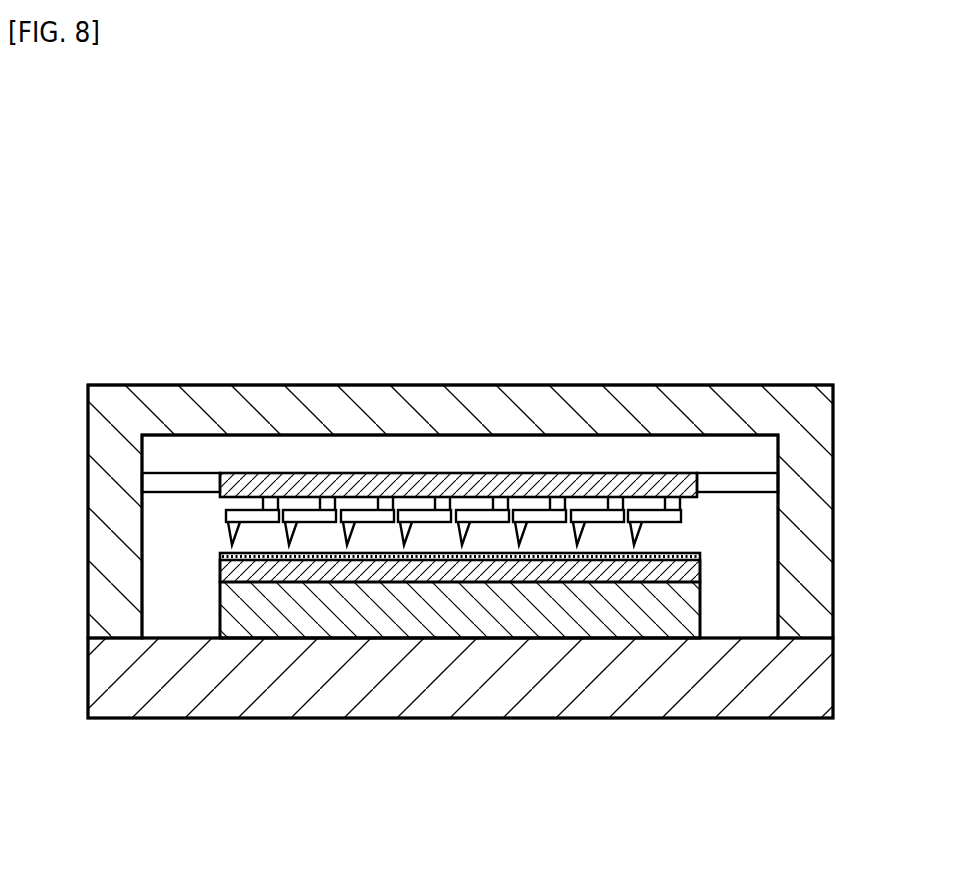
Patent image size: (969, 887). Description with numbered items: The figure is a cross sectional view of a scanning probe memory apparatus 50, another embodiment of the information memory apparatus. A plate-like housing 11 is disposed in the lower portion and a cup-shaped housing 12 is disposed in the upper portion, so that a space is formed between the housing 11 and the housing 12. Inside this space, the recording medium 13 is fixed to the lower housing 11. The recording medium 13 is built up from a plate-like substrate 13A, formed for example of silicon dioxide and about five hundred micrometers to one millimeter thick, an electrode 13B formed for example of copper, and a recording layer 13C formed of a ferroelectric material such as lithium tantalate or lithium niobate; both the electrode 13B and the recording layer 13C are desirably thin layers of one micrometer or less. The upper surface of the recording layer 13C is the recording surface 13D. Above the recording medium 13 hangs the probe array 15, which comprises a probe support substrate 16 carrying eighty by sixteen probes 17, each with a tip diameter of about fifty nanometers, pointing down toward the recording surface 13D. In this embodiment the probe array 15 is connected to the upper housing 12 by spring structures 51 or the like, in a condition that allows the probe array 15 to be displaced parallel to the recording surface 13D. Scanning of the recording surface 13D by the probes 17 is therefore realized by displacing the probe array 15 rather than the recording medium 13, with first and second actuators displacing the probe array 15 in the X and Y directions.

The probe memory apparatus 50 is at (776, 345).
The cup-shaped housing 12 is at (433, 385).
The plate-like housing 11 is at (440, 708).
The probe array 15 is at (352, 452).
The spring structures 51 is at (198, 480).
The probe support substrate 16 is at (488, 480).
The probes 17 is at (608, 497).
The recording medium 13 is at (700, 570).
The recording surface 13D is at (683, 556).
The recording layer 13C is at (230, 558).
The electrode 13B is at (220, 578).
The substrate 13A is at (565, 625).